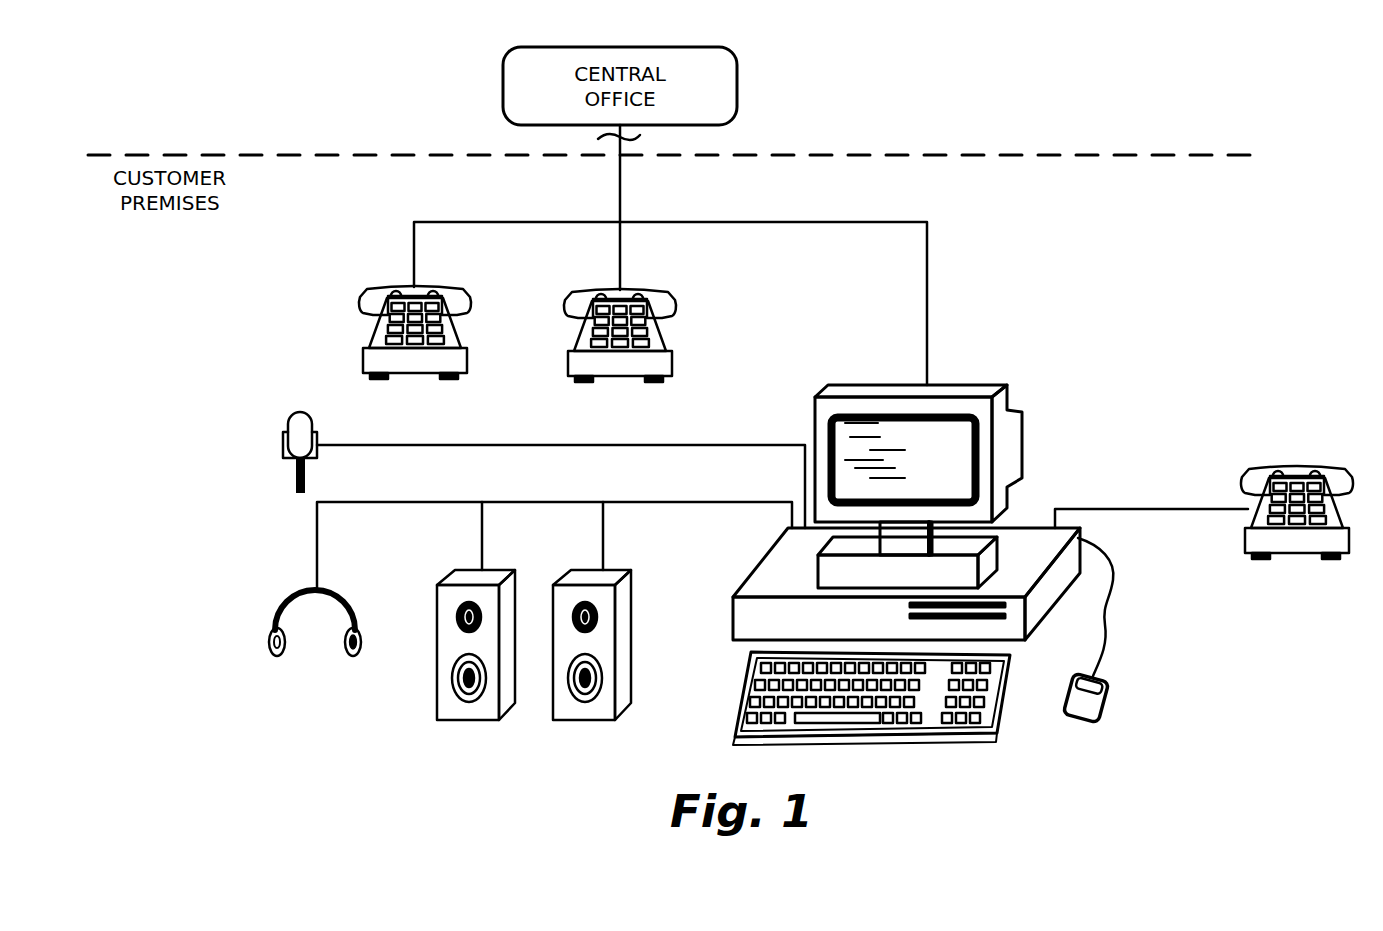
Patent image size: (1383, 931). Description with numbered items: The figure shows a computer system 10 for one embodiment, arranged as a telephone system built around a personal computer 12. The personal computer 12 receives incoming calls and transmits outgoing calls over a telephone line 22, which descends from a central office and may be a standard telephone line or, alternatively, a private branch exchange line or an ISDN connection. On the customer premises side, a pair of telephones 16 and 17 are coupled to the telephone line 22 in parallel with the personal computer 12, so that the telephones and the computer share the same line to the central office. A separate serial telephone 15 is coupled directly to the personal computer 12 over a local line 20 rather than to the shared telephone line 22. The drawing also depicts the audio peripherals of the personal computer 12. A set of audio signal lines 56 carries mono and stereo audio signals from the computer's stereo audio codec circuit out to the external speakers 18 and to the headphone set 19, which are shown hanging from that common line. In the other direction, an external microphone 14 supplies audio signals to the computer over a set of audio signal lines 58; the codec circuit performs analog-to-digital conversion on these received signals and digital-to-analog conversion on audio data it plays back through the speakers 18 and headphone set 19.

The computer system 10 is at (1022, 109).
The personal computer 12 is at (970, 384).
The external microphone 14 is at (284, 420).
The serial telephone 15 is at (1332, 467).
The telephone 16 is at (432, 273).
The telephone 17 is at (640, 278).
The external speakers 18 is at (555, 722).
The headphone set 19 is at (266, 622).
The local line 20 is at (1143, 507).
The telephone line 22 is at (800, 216).
The audio signal lines 56 is at (690, 493).
The audio signal lines 58 is at (528, 441).